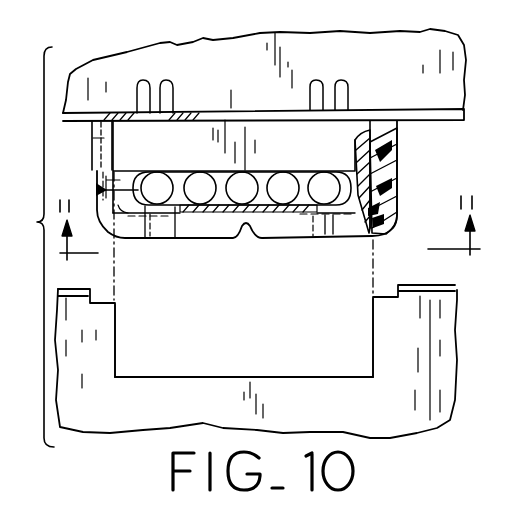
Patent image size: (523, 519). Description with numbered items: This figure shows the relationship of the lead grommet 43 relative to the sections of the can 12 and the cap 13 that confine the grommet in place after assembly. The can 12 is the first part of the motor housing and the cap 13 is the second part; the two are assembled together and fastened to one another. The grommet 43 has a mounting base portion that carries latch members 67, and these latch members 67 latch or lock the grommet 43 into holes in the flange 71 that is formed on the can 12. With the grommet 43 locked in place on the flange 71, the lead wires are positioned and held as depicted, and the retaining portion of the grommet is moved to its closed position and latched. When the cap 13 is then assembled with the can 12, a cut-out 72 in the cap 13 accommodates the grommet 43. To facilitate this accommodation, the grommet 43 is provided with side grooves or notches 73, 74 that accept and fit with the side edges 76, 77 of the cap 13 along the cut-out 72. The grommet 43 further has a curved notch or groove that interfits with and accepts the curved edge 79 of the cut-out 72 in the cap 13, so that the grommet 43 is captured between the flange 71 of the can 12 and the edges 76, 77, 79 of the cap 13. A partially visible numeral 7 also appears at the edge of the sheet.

The can 12 is at (392, 59).
The cap 13 is at (432, 381).
The lead grommet 43 is at (400, 163).
The latch members 67 is at (348, 92).
The flange 71 is at (224, 117).
The cut-out 72 is at (200, 350).
The side groove 73 is at (388, 135).
The side groove 74 is at (104, 142).
The side edge 76 is at (377, 321).
The side edge 77 is at (114, 318).
The curved edge 79 is at (260, 377).
The section line 7 is at (517, 165).